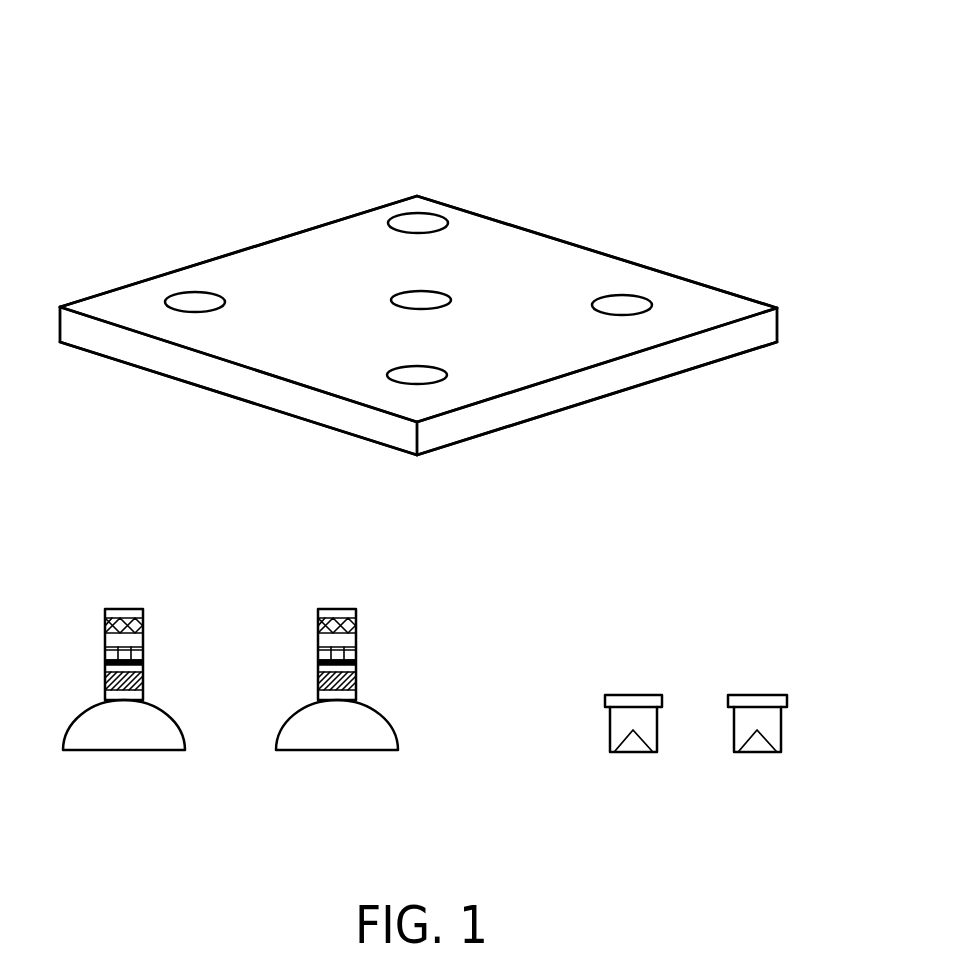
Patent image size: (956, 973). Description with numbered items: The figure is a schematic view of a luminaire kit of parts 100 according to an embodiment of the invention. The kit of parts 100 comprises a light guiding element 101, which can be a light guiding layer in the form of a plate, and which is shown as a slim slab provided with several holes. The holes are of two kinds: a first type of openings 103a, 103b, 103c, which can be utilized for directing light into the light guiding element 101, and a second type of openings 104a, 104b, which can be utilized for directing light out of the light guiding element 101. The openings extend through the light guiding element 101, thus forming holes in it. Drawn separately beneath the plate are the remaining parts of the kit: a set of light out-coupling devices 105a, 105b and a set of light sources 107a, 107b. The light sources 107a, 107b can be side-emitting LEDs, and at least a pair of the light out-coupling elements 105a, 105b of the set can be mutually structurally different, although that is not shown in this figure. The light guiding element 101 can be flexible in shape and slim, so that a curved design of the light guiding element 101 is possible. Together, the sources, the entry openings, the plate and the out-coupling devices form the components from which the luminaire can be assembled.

The luminaire kit of parts 100 is at (133, 101).
The light guiding element 101 is at (560, 238).
The first type of opening 103a is at (178, 292).
The first type of opening 103b is at (400, 216).
The first type of opening 103c is at (397, 386).
The second type of opening 104a is at (396, 293).
The second type of opening 104b is at (645, 316).
The light out-coupling device 105a is at (143, 680).
The light out-coupling device 105b is at (356, 680).
The light source 107a is at (622, 755).
The light source 107b is at (747, 755).